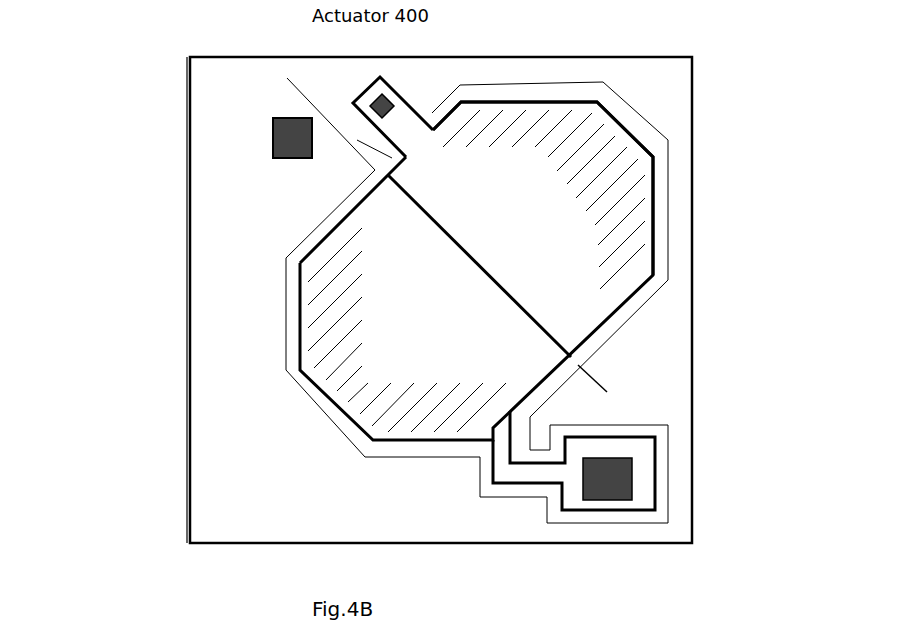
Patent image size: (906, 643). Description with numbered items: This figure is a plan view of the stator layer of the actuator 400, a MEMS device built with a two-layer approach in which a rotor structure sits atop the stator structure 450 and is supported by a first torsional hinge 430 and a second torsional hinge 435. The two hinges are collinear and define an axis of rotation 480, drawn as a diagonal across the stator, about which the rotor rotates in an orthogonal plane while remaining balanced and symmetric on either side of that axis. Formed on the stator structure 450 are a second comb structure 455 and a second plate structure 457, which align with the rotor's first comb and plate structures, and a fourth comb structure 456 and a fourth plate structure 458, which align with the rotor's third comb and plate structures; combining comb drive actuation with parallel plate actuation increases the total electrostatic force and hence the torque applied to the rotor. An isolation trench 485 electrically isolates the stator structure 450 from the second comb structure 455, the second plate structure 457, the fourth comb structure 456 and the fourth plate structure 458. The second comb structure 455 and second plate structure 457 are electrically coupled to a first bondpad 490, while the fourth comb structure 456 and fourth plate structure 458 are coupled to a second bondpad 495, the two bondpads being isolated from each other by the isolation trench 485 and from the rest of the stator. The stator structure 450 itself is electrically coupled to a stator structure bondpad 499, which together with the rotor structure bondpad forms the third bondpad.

The actuator 400 is at (439, 300).
The axis of rotation 480 is at (288, 102).
The stator structure bondpad 499 is at (252, 150).
The first torsional hinge 430 is at (347, 170).
The second plate structure 457 is at (390, 287).
The second comb structure 455 is at (322, 310).
The stator structure 450 is at (277, 365).
The isolation trench 485 is at (336, 427).
The second bondpad 495 is at (402, 102).
The fourth comb structure 456 is at (617, 158).
The fourth plate structure 458 is at (523, 237).
The second torsional hinge 435 is at (617, 375).
The first bondpad 490 is at (648, 475).